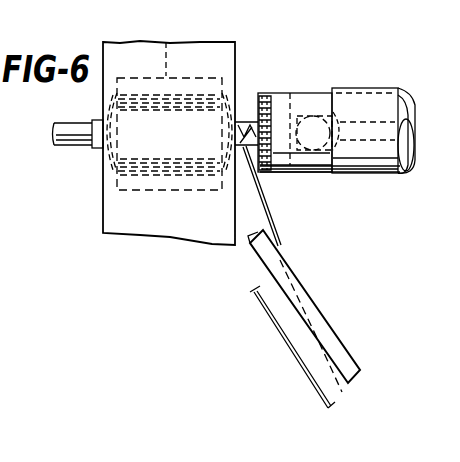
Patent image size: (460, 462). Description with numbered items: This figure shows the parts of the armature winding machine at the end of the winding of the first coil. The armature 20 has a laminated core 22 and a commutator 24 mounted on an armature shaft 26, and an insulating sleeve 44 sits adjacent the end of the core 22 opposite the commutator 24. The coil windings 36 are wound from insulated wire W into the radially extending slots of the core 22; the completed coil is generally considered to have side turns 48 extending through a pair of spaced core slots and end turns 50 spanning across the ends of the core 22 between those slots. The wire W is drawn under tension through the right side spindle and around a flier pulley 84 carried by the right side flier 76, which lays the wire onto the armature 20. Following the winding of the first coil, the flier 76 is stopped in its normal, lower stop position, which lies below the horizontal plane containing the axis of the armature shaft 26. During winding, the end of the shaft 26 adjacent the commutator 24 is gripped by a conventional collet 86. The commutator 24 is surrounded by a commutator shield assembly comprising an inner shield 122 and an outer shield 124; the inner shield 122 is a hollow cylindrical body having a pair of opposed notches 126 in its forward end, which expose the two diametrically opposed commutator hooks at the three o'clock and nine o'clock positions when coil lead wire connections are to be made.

The armature 20 is at (123, 198).
The laminated core 22 is at (161, 46).
The commutator 24 is at (300, 102).
The armature shaft 26 is at (55, 139).
The coil windings 36 is at (247, 119).
The insulating sleeve 44 is at (93, 126).
The side turns 48 is at (184, 92).
The end turns 50 is at (100, 170).
The right side flier 76 is at (325, 328).
The flier pulley 84 is at (308, 374).
The collet 86 is at (331, 180).
The inner shield 122 is at (334, 91).
The outer shield 124 is at (371, 92).
The notches 126 is at (271, 93).
The wire W is at (272, 219).